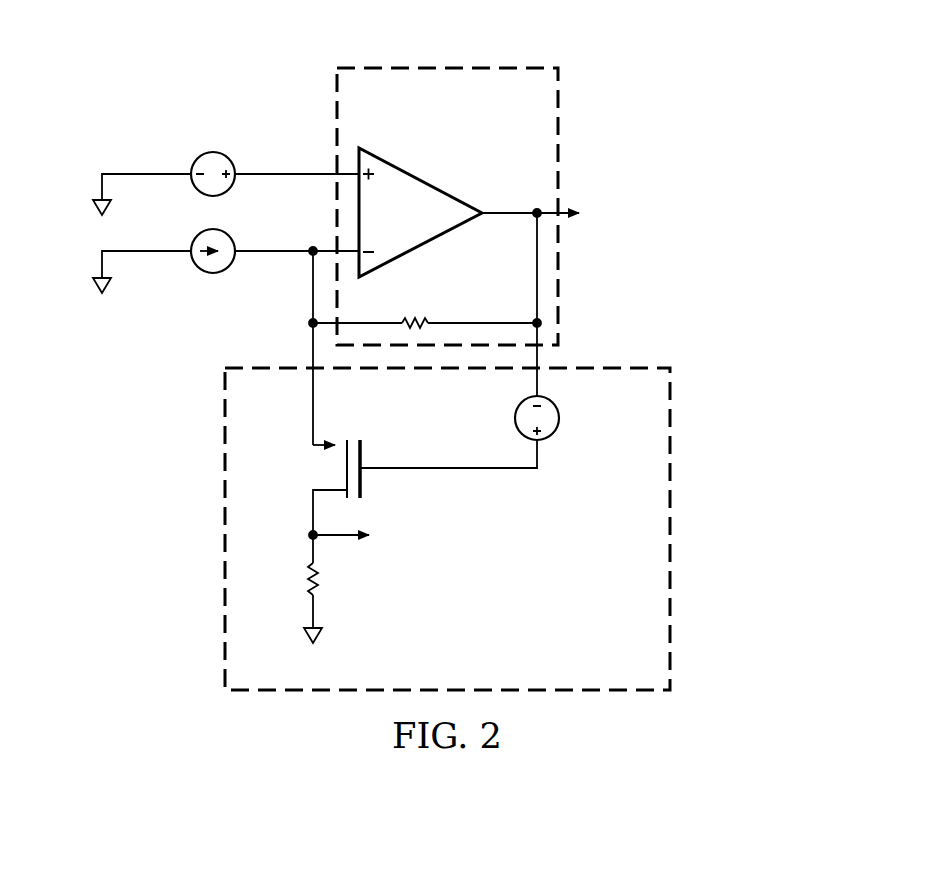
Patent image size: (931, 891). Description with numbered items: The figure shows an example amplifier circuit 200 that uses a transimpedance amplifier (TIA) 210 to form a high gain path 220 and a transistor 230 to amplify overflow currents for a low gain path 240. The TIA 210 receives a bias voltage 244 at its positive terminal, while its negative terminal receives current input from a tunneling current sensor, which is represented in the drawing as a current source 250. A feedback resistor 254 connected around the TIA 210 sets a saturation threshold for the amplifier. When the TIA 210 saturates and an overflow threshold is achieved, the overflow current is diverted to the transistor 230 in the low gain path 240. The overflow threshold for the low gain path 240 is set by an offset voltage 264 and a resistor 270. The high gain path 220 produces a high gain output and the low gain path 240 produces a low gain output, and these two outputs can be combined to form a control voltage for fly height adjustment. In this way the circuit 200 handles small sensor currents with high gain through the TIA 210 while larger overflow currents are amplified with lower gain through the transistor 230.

The amplifier circuit 200 is at (746, 98).
The transimpedance amplifier 210 is at (417, 181).
The high gain path 220 is at (502, 62).
The transistor 230 is at (363, 456).
The low gain path 240 is at (609, 698).
The bias voltage 244 is at (233, 188).
The current source 250 is at (195, 233).
The feedback resistor 254 is at (417, 318).
The offset voltage 264 is at (548, 442).
The resistor 270 is at (308, 578).